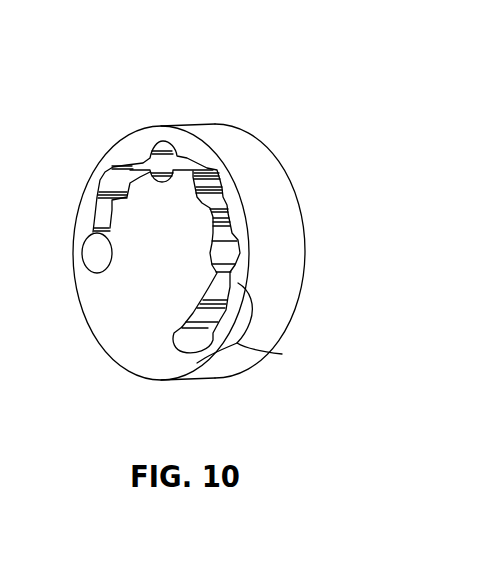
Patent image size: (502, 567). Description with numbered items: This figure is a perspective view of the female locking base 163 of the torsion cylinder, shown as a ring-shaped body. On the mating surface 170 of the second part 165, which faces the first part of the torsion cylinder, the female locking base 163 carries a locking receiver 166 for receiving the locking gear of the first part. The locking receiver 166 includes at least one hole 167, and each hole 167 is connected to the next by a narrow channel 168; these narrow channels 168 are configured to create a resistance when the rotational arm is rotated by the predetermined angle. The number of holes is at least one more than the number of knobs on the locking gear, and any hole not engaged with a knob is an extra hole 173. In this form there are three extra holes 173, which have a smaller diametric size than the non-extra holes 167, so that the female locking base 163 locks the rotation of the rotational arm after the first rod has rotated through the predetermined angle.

The female locking base 163 is at (277, 202).
The second part 165 is at (200, 65).
The locking receiver 166 is at (132, 135).
The hole 167 is at (97, 260).
The narrow channel 168 is at (95, 207).
The mating surface 170 is at (97, 307).
The extra hole 173 is at (282, 354).